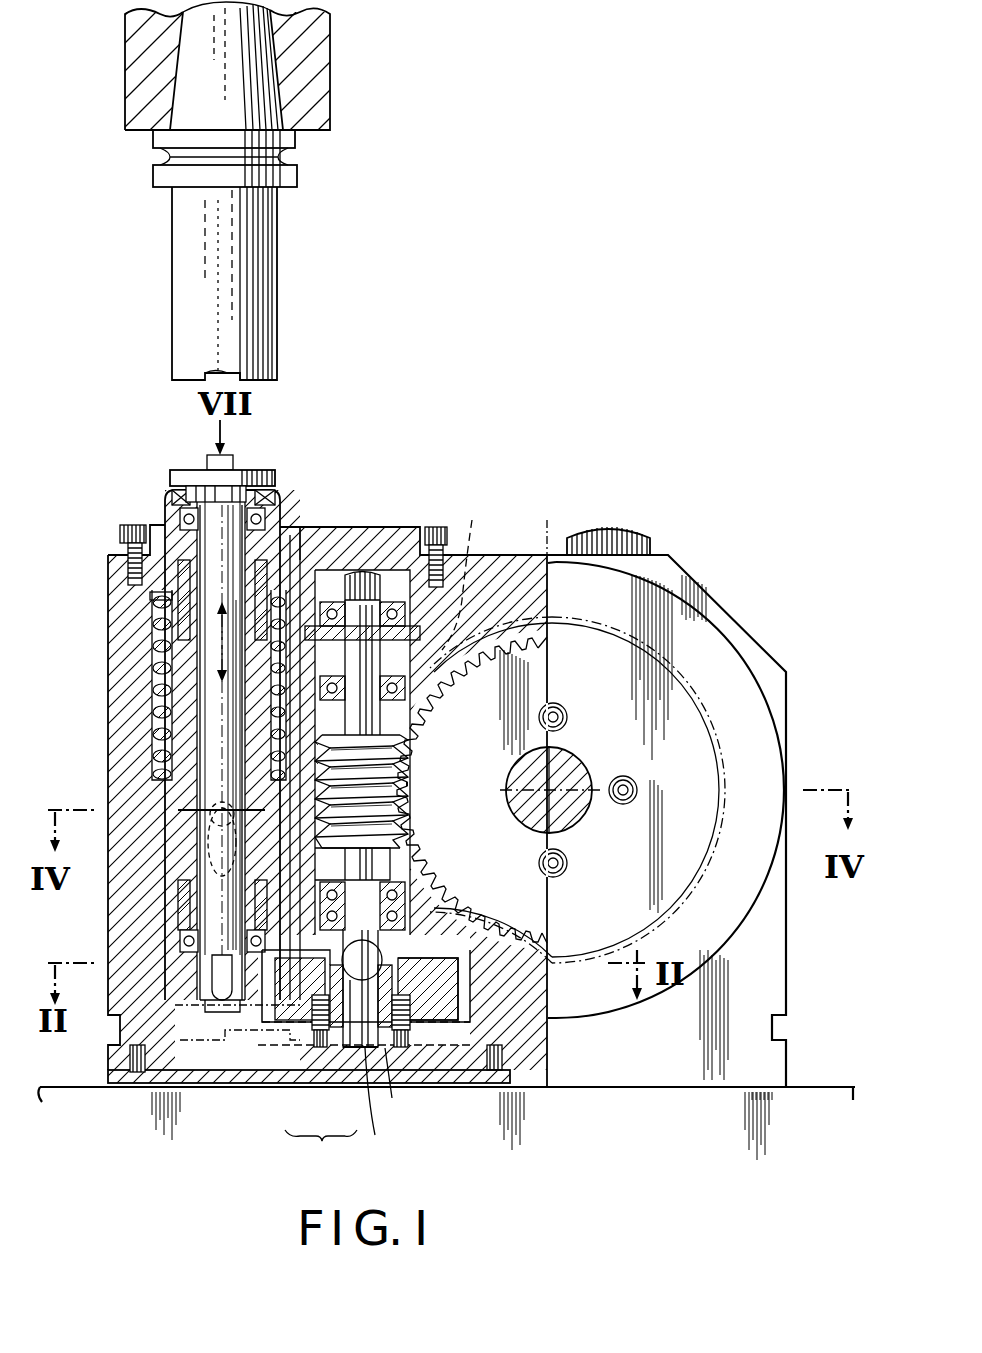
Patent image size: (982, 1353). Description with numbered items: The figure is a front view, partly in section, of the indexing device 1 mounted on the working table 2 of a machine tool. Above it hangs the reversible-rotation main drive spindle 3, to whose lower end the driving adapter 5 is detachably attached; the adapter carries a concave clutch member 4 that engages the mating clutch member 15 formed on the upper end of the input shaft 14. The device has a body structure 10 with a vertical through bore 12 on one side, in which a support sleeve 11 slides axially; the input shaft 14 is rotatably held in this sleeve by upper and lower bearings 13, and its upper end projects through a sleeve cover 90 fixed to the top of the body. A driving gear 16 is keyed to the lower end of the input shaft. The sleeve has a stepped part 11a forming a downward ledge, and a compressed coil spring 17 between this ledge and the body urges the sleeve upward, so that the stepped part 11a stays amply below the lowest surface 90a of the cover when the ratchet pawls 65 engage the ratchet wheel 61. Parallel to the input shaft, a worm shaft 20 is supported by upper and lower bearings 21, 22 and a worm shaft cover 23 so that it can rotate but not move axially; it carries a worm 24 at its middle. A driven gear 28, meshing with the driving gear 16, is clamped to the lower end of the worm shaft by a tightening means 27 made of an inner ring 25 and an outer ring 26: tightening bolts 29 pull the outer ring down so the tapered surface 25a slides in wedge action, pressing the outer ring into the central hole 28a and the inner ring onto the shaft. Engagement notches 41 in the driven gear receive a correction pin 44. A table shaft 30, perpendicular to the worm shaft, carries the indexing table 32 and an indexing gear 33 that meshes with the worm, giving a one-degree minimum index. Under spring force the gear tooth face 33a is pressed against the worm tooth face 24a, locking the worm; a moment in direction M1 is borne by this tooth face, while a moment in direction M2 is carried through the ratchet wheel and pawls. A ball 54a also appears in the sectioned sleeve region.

The indexing device 1 is at (690, 552).
The working table 2 is at (824, 1087).
The main drive spindle 3 is at (318, 72).
The clutch member 4 is at (196, 378).
The driving adapter 5 is at (272, 252).
The body structure 10 is at (112, 663).
The support sleeve 11 is at (178, 688).
The stepped part 11a is at (296, 546).
The through bore 12 is at (178, 868).
The bearings 13 is at (180, 508).
The input shaft 14 is at (202, 632).
The clutch member 15 is at (236, 468).
The driving gear 16 is at (190, 1010).
The coil spring 17 is at (152, 742).
The worm shaft 20 is at (412, 876).
The upper bearing 21 is at (400, 618).
The lower bearing 22 is at (415, 906).
The worm shaft cover 23 is at (386, 545).
The worm 24 is at (410, 752).
The worm tooth face 24a is at (408, 815).
The inner ring 25 is at (335, 1050).
The tapered surface 25a is at (439, 1110).
The outer ring 26 is at (310, 1050).
The tightening means 27 is at (321, 1151).
The driven gear 28 is at (455, 1012).
The central hole 28a is at (413, 1091).
The tightening bolts 29 is at (405, 1046).
The table shaft 30 is at (578, 790).
The indexing table 32 is at (703, 628).
The indexing gear 33 is at (484, 640).
The gear tooth face 33a is at (411, 772).
The engagement notches 41 is at (290, 962).
The correction pin 44 is at (400, 1000).
The ball 54a is at (205, 832).
The ratchet wheel 61 is at (591, 630).
The ratchet pawl 65 is at (499, 568).
The sleeve cover 90 is at (126, 548).
The lowest surface 90a is at (150, 600).
The moment direction M1 is at (820, 822).
The moment direction M2 is at (808, 708).